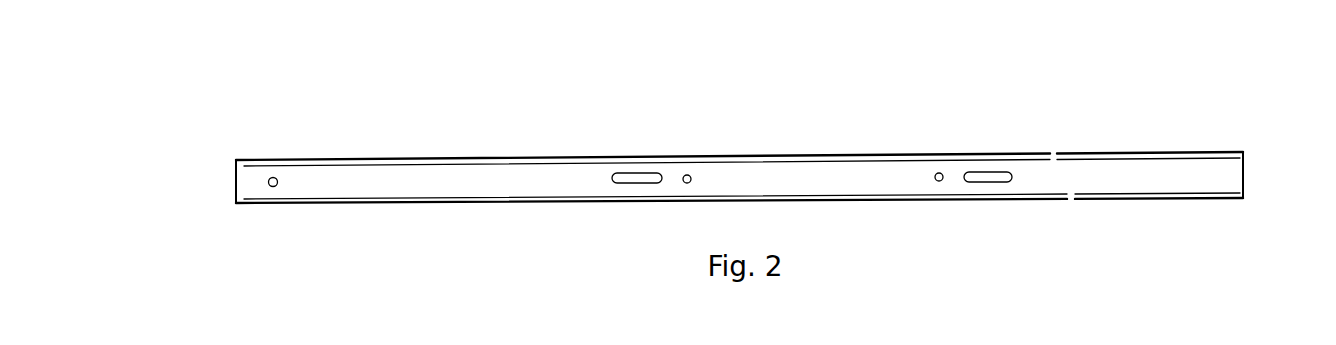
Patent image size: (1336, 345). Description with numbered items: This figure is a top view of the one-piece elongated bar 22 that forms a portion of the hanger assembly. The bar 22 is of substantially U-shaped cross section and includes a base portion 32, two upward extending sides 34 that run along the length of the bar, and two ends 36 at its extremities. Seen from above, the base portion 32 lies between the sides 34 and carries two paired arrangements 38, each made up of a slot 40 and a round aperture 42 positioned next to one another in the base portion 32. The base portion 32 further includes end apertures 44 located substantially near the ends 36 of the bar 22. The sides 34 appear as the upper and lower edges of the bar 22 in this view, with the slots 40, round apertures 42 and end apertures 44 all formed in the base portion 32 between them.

The elongated bar 22 is at (404, 107).
The base portion 32 is at (450, 190).
The upward extending sides 34 is at (739, 196).
The ends 36 is at (235, 182).
The paired arrangement 38 is at (655, 222).
The slot 40 is at (637, 176).
The round aperture 42 is at (688, 175).
The end aperture 44 is at (274, 187).